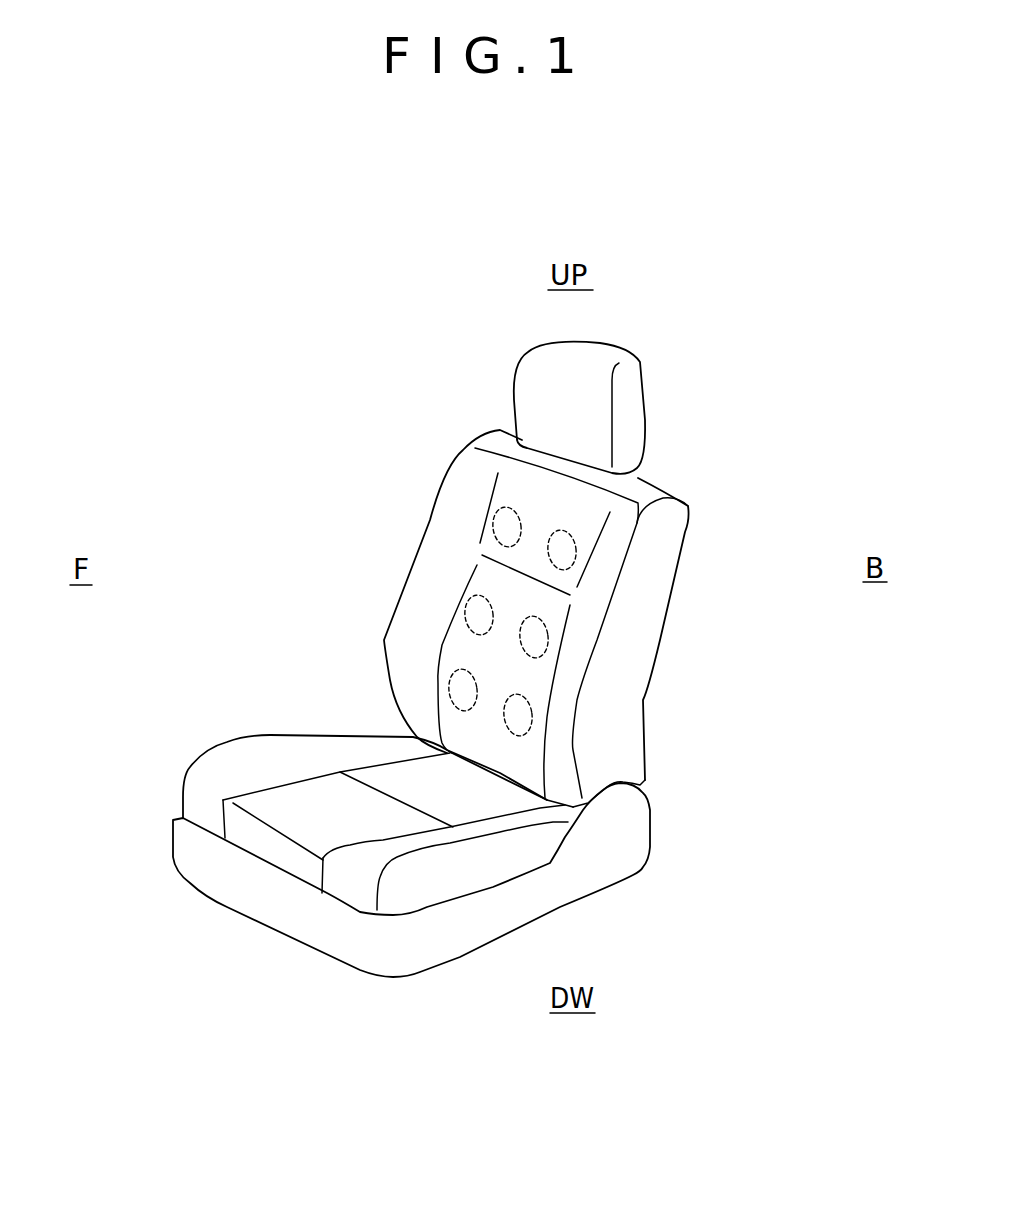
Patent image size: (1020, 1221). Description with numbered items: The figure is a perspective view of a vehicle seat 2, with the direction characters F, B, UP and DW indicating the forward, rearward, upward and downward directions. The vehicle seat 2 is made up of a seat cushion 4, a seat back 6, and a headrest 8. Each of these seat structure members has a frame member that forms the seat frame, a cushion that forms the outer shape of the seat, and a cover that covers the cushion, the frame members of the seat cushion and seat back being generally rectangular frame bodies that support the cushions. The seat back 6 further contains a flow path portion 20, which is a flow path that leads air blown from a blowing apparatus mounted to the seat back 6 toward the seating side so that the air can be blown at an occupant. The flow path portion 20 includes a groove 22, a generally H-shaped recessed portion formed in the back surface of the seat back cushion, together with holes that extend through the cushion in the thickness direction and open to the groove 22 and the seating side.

The vehicle seat 2 is at (712, 379).
The seat cushion 4 is at (260, 757).
The seat back 6 is at (417, 557).
The headrest 8 is at (537, 397).
The flow path portion 20 is at (530, 600).
The groove 22 is at (530, 600).